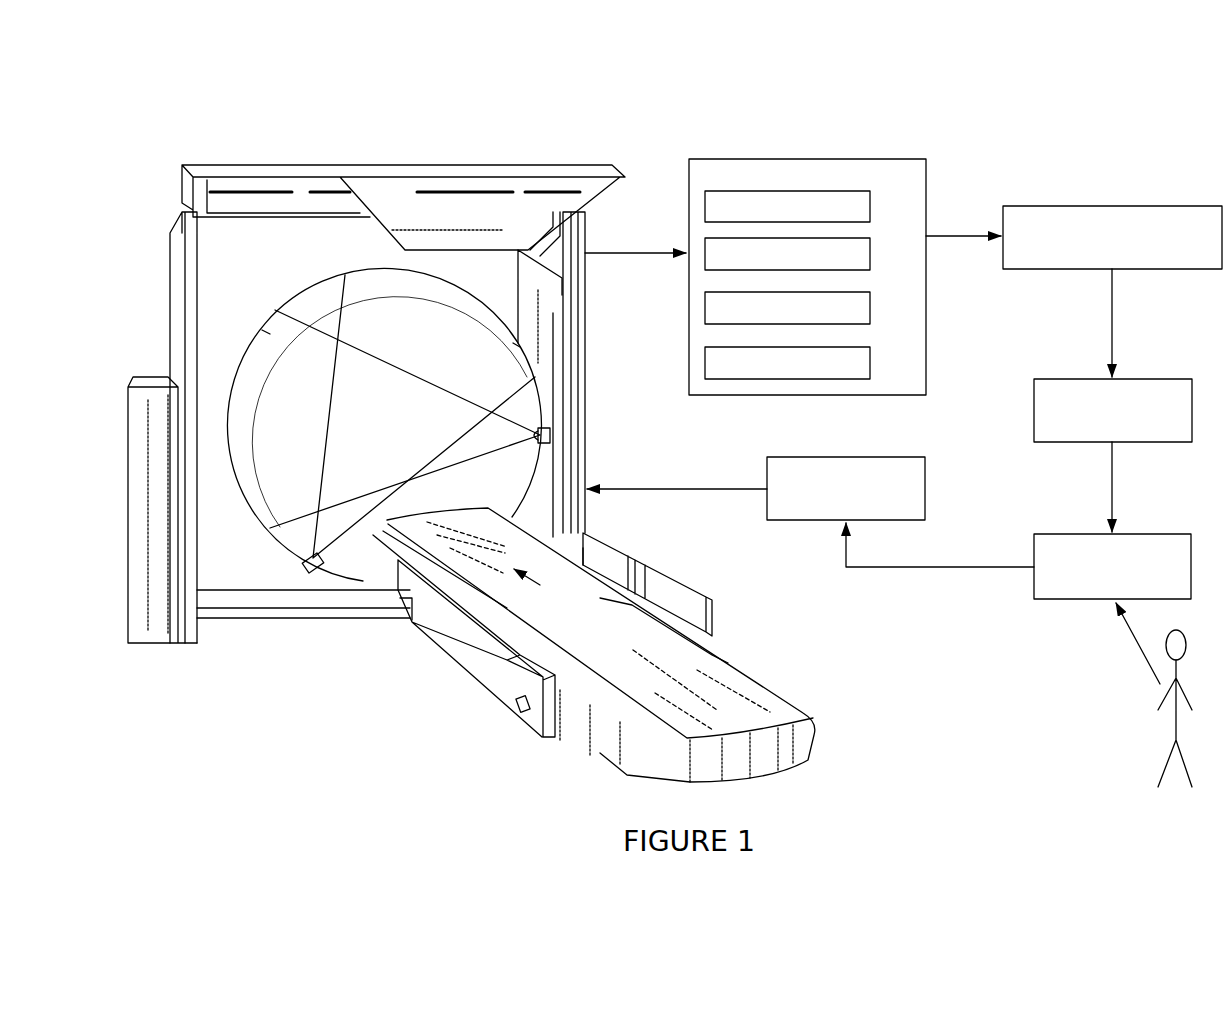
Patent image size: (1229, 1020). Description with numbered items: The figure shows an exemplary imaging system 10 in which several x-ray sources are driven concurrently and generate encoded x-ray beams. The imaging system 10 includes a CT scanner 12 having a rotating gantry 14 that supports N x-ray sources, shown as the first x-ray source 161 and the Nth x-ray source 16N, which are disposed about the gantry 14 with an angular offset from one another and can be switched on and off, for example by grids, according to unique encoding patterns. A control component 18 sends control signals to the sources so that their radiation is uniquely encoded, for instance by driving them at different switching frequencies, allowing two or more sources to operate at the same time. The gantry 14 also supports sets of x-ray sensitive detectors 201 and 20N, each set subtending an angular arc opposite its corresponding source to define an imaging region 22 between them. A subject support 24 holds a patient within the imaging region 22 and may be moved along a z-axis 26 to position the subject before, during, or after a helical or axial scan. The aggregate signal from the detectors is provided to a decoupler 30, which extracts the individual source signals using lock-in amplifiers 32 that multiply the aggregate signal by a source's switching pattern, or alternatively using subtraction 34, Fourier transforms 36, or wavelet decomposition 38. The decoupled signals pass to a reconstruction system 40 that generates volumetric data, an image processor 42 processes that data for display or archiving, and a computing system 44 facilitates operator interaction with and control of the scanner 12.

The imaging system 10 is at (200, 92).
The CT scanner 12 is at (520, 136).
The rotating gantry 14 is at (292, 303).
The x-ray source 16N is at (552, 432).
The x-ray source 161 is at (310, 572).
The control component 18 is at (878, 457).
The set of x-ray sensitive detectors 20N is at (267, 332).
The set of x-ray sensitive detectors 201 is at (517, 345).
The imaging region 22 is at (395, 425).
The subject support 24 is at (750, 695).
The z-axis 26 is at (560, 590).
The decoupler 30 is at (880, 159).
The lock-in amplifiers 32 is at (872, 212).
The subtraction 34 is at (872, 260).
The Fourier transforms 36 is at (872, 314).
The wavelet decomposition 38 is at (872, 368).
The reconstruction system 40 is at (1163, 206).
The image processor 42 is at (1147, 379).
The computing system 44 is at (1147, 534).